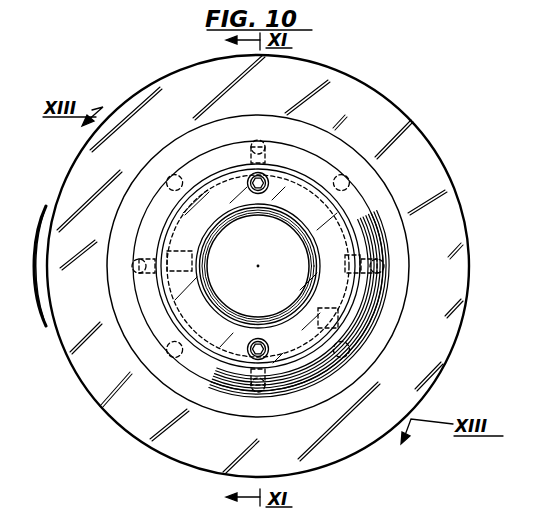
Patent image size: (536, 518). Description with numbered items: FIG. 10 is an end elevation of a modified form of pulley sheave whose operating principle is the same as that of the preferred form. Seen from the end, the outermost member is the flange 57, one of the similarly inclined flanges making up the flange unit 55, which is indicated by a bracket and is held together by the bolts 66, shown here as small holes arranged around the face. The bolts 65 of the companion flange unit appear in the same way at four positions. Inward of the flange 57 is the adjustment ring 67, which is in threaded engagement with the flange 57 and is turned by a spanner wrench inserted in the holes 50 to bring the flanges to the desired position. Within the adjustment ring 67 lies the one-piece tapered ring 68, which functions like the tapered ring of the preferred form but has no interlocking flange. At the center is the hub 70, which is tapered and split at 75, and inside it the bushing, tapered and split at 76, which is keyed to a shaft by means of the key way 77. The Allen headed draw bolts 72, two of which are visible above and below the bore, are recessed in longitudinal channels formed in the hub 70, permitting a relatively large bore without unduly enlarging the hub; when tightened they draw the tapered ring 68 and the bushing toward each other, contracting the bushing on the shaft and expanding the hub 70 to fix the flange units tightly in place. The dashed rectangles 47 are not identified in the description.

The slot 47 is at (312, 258).
The holes 50 is at (148, 250).
The flange unit 55 is at (36, 266).
The flange 57 is at (462, 313).
The bolts 65 is at (258, 140).
The bolts 66 is at (169, 177).
The adjustment ring 67 is at (160, 226).
The tapered ring 68 is at (182, 309).
The hub 70 is at (222, 308).
The draw bolts 72 is at (258, 194).
The split 75 is at (212, 210).
The split 76 is at (317, 256).
The key way 77 is at (203, 268).